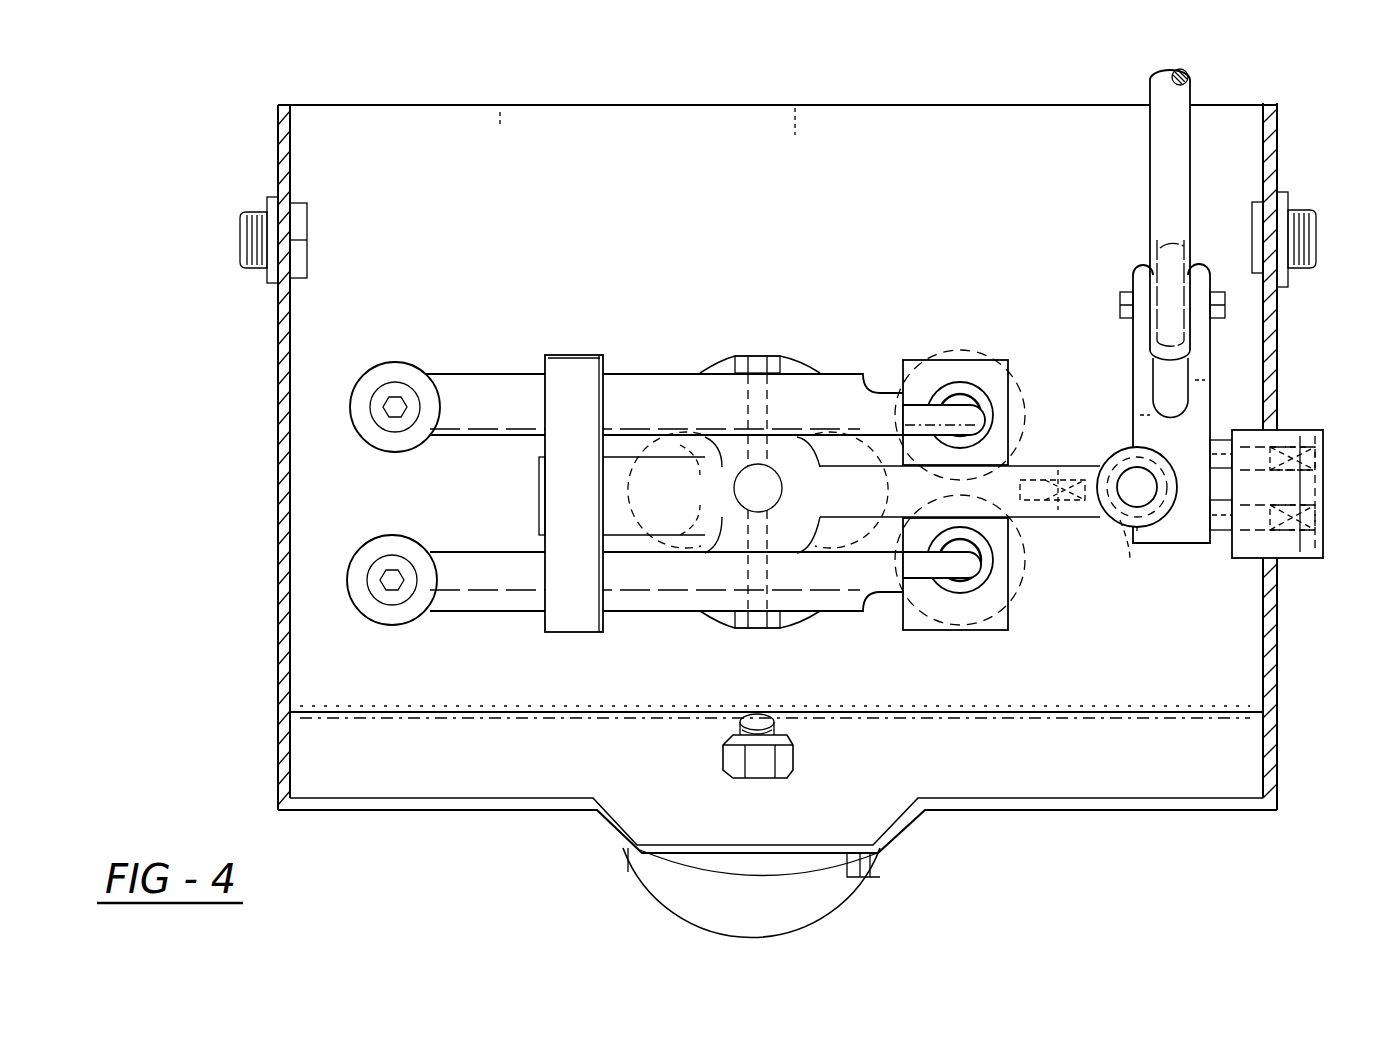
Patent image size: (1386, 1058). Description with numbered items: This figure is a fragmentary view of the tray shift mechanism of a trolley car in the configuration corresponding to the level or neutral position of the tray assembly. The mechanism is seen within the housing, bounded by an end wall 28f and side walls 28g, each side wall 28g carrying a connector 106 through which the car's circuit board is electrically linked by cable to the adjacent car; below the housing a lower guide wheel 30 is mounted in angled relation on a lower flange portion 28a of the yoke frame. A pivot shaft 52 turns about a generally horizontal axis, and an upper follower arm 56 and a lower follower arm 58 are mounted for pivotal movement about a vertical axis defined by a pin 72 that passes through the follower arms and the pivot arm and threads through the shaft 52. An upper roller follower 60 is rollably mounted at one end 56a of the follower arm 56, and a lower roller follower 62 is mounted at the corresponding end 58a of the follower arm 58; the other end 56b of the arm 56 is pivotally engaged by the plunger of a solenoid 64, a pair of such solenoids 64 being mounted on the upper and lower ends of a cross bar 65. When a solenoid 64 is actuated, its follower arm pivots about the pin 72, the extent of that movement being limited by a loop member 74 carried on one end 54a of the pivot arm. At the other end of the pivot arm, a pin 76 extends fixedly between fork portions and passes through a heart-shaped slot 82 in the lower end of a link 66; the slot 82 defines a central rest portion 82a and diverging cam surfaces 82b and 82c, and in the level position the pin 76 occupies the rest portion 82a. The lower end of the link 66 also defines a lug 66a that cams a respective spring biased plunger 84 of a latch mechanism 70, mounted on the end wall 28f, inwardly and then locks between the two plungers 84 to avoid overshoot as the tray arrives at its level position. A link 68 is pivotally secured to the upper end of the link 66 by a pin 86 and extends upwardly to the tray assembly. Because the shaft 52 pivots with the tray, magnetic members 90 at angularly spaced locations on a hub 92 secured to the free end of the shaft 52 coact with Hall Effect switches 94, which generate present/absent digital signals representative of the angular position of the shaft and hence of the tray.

The lower flange portion 28a is at (468, 775).
The end wall 28f is at (945, 191).
The side wall 28g is at (280, 578).
The lower guide wheel 30 is at (862, 870).
The pivot shaft 52 is at (851, 495).
The one end of pivot arm 54a is at (539, 493).
The upper follower arm 56 is at (640, 372).
The one end of upper follower arm 56a is at (480, 372).
The other end of upper follower arm 56b is at (925, 372).
The lower follower arm 58 is at (655, 612).
The lower link arm first end 58a is at (490, 612).
The upper roller follower 60 is at (380, 365).
The lower roller follower 62 is at (365, 540).
The solenoid 64 is at (960, 355).
The cross bar 65 is at (990, 370).
The link 66 is at (1133, 347).
The lug 66a is at (1138, 484).
The link 68 is at (1160, 157).
The latch mechanism 70 is at (1325, 480).
The pin 72 is at (797, 355).
The loop member 74 is at (575, 360).
The pin 76 is at (1147, 478).
The heart-shaped slot 82 is at (1165, 530).
The central rest portion 82a is at (1113, 525).
The diverging cam surface 82b is at (1118, 452).
The diverging cam surface 82c is at (1140, 540).
The spring biased plunger 84 is at (1217, 545).
The pin 86 is at (1120, 305).
The magnetic member 90 is at (758, 476).
The hub 92 is at (851, 490).
The Hall Effect switch 94 is at (664, 490).
The connector 106 is at (250, 280).